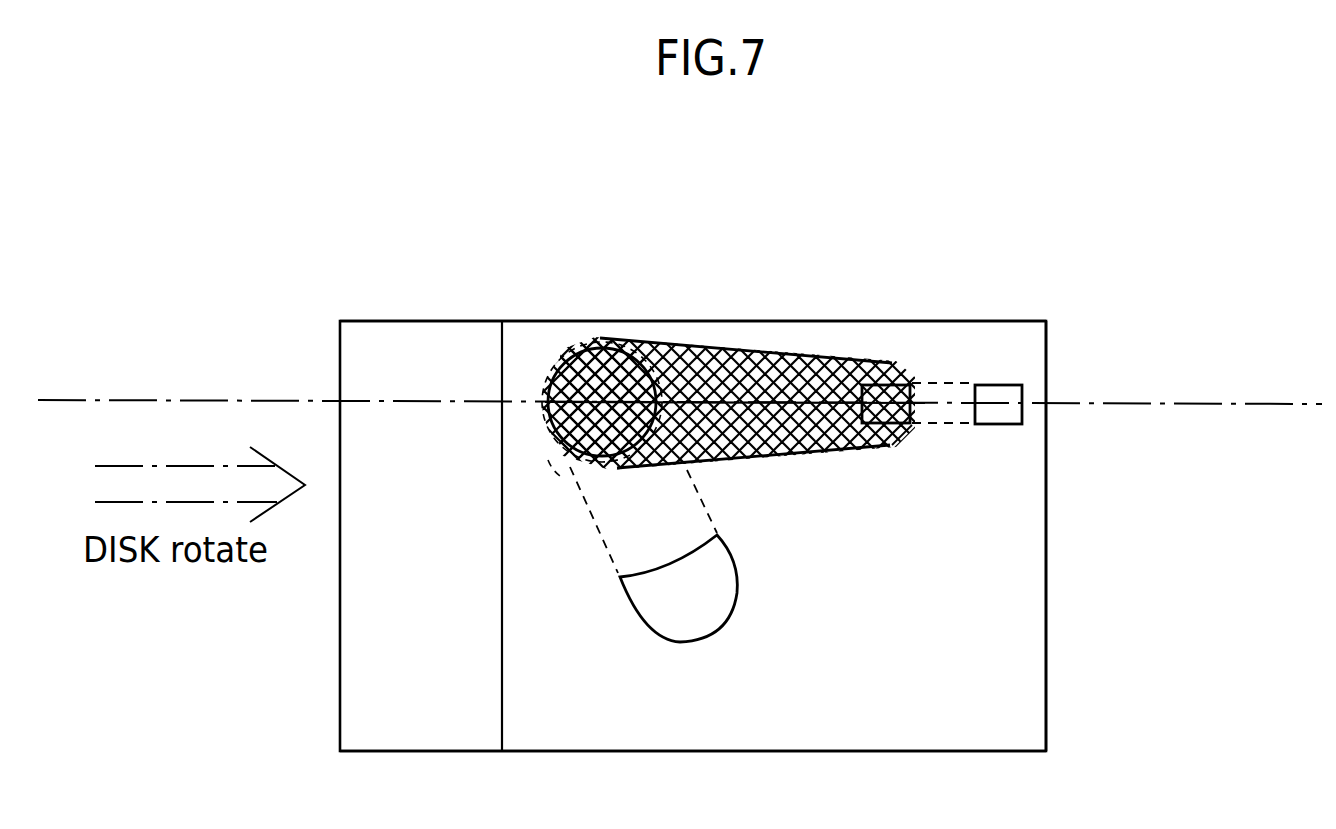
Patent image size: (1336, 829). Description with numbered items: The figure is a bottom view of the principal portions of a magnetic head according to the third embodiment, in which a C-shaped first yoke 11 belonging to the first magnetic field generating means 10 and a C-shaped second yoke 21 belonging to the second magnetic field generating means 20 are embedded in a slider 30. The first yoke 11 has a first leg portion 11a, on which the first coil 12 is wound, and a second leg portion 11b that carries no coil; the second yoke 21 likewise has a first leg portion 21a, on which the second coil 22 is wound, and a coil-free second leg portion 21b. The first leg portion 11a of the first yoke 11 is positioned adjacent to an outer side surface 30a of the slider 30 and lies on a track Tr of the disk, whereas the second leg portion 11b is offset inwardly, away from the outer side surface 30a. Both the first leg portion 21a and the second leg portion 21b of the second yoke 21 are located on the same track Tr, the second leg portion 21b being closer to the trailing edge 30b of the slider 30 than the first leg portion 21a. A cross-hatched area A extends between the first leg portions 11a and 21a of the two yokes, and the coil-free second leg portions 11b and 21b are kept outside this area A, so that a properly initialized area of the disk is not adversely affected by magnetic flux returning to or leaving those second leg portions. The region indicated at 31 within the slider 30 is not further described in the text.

The first magnetic field generating means 10 is at (568, 342).
The first yoke 11 is at (597, 528).
The first leg portion of first yoke 11a is at (635, 343).
The second leg portion of first yoke 11b is at (693, 620).
The first coil 12 is at (548, 460).
The second magnetic field generating means 20 is at (1009, 389).
The second yoke 21 is at (957, 437).
The first leg portion of second yoke 21a is at (895, 445).
The second leg portion of second yoke 21b is at (1020, 383).
The second coil 22 is at (845, 455).
The slider 30 is at (764, 472).
The outer side surface of slider 30a is at (723, 321).
The trailing edge of slider 30b is at (1047, 595).
The housing base 31 is at (1000, 682).
The cross-hatched area A is at (770, 347).
The track Tr is at (187, 399).